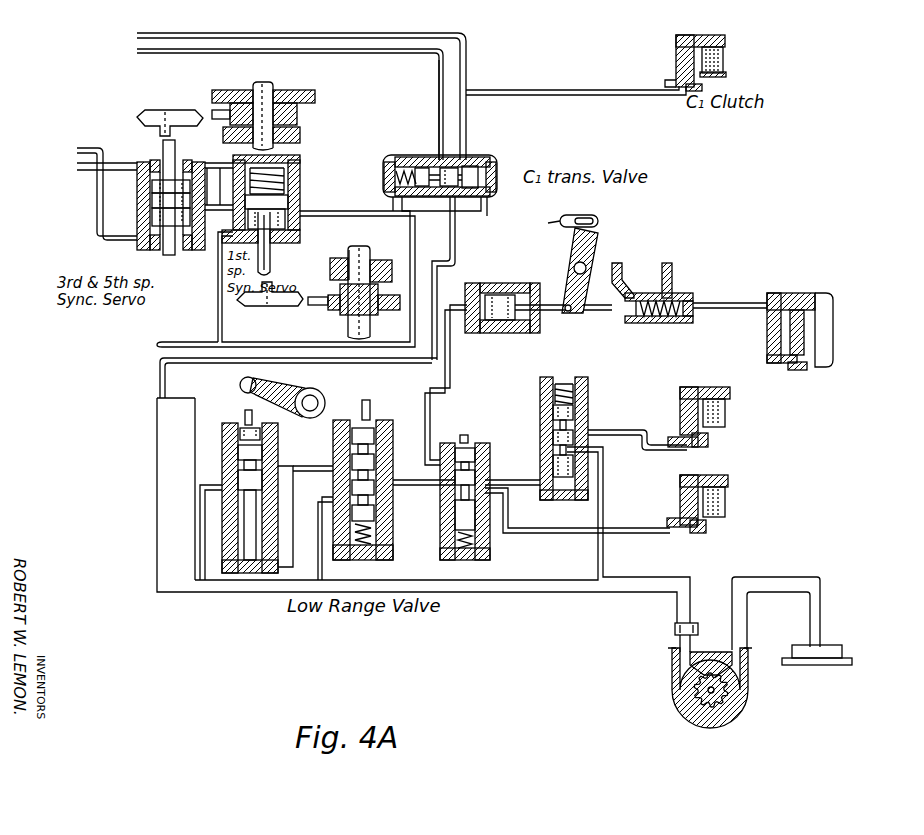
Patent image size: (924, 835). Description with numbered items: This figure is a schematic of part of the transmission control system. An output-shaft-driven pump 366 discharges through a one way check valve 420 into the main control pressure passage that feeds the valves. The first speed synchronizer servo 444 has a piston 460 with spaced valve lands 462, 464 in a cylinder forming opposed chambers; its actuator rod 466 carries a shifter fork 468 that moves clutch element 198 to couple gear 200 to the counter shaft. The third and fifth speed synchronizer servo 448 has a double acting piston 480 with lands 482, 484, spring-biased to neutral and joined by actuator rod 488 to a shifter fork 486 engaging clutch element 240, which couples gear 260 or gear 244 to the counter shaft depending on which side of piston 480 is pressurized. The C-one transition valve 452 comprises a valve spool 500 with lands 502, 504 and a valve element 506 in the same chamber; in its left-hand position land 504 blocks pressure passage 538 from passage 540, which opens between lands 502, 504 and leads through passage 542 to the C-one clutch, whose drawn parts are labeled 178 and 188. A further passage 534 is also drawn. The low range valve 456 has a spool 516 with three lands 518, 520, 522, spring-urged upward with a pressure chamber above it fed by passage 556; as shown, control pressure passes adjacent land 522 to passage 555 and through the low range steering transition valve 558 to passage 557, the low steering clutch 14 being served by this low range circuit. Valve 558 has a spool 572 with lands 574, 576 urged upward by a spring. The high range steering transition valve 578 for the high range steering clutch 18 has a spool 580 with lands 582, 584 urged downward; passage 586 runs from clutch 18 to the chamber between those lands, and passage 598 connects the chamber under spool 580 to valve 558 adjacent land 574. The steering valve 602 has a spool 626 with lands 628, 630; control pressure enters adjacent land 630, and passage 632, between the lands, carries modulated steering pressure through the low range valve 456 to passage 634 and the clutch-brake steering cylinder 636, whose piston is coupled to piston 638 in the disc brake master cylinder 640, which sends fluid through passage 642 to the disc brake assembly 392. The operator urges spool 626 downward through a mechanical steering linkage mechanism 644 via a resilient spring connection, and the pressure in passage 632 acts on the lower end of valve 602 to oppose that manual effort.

The low steering clutch 14 is at (671, 486).
The high range steering clutch 18 is at (692, 383).
The clutch housing 178 is at (672, 52).
The clutch plates 188 is at (722, 76).
The clutch element 198 is at (372, 310).
The gear 200 is at (334, 271).
The clutch element 240 is at (300, 113).
The gear 244 is at (300, 141).
The gear 260 is at (306, 90).
The power output shaft driven pump 366 is at (664, 704).
The disc brake assembly 392 is at (827, 323).
The one way check valve 420 is at (675, 628).
The first speed synchronizer servo 444 is at (300, 235).
The third and fifth speed synchronizer servo 448 is at (147, 238).
The C1 transition valve 452 is at (422, 165).
The low range valve 456 is at (370, 410).
The piston member 460 is at (292, 187).
The valve land 462 is at (293, 173).
The valve land 464 is at (293, 207).
The actuator rod 466 is at (274, 262).
The shift fork 468 is at (285, 305).
The double acting piston 480 is at (155, 187).
The valve land 482 is at (155, 200).
The valve land 484 is at (155, 213).
The shifter fork 486 is at (178, 112).
The actuator rod 488 is at (162, 160).
The valve spool 500 is at (449, 192).
The valve land 502 is at (432, 196).
The valve land 504 is at (462, 160).
The valve element 506 is at (497, 170).
The valve spool 516 is at (375, 455).
The valve land 518 is at (375, 428).
The valve land 520 is at (350, 480).
The valve land 522 is at (375, 510).
The fluid conduit 534 is at (157, 344).
The pressure passage 538 is at (455, 250).
The passage 540 is at (440, 118).
The passage 542 is at (557, 90).
The passage 555 is at (428, 482).
The passage 556 is at (158, 360).
The passage 557 is at (565, 533).
The low range steering transition valve 558 is at (462, 448).
The valve spool 572 is at (485, 480).
The valve land 574 is at (483, 465).
The valve land 576 is at (458, 523).
The high range steering transition valve 578 is at (580, 395).
The valve spool 580 is at (565, 425).
The valve land 582 is at (572, 408).
The valve land 584 is at (567, 472).
The passage 586 is at (647, 440).
The passage 598 is at (518, 485).
The steering valve 602 is at (275, 445).
The valve spool 626 is at (240, 468).
The valve land 628 is at (262, 457).
The valve land 630 is at (240, 490).
The passage 632 is at (276, 466).
The passage 634 is at (430, 408).
The clutch-brake steering cylinder 636 is at (496, 275).
The piston 638 is at (640, 316).
The disc brake master cylinder 640 is at (680, 270).
The passage 642 is at (720, 307).
The mechanical steering linkage mechanism 644 is at (283, 392).